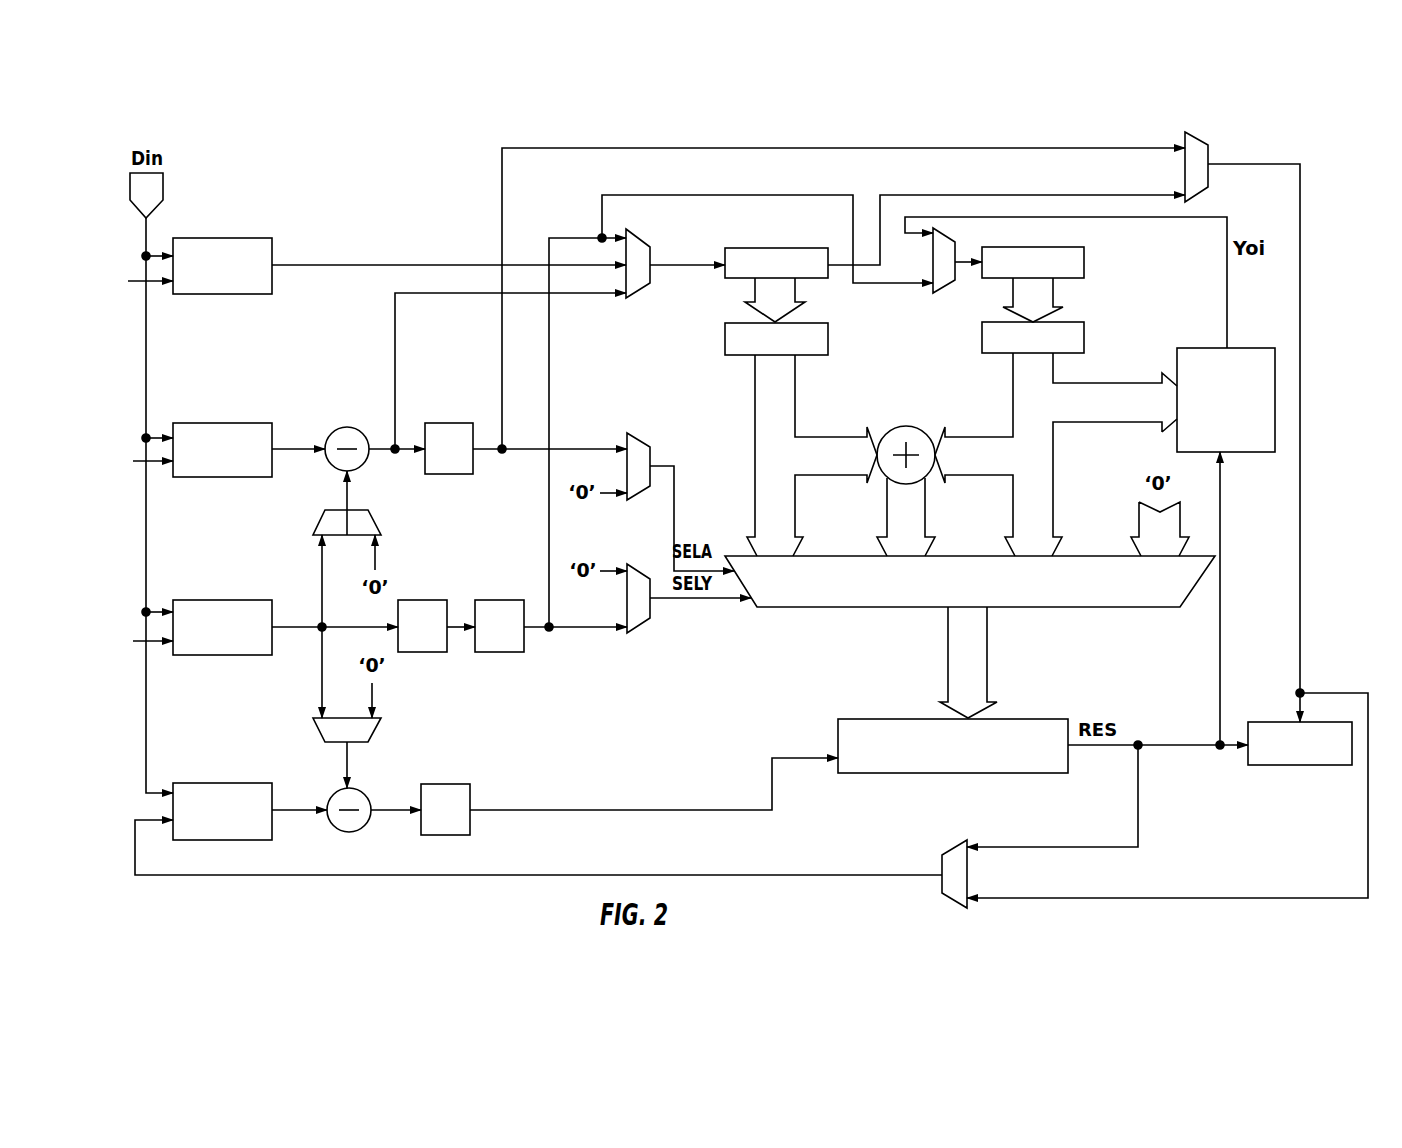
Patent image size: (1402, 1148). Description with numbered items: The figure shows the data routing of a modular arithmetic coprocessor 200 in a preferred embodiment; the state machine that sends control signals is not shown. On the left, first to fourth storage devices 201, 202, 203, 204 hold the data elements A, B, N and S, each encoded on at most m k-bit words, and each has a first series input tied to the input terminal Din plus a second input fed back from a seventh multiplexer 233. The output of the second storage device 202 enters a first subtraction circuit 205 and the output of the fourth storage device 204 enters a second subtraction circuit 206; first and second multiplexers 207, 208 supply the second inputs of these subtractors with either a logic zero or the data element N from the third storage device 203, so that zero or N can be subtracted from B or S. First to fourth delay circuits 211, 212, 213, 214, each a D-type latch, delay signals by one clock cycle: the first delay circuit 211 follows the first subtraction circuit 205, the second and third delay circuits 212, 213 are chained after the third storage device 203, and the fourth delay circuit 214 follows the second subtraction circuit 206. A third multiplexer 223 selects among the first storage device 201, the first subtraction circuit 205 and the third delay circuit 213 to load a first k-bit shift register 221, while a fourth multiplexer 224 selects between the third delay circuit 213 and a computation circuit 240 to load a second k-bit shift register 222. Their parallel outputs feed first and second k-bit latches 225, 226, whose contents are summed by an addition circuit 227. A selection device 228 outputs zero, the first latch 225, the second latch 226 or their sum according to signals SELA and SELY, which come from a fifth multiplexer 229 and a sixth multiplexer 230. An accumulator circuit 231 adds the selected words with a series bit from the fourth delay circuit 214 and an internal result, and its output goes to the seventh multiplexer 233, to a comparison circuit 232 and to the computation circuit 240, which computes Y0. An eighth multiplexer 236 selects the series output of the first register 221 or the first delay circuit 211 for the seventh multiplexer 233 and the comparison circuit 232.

The modular arithmetic coprocessor 200 is at (370, 209).
The first storage device 201 is at (219, 238).
The second storage device 202 is at (213, 423).
The third storage device 203 is at (219, 600).
The fourth storage device 204 is at (222, 783).
The first subtraction circuit 205 is at (347, 427).
The second subtraction circuit 206 is at (349, 832).
The first multiplexer 207 is at (381, 530).
The second multiplexer 208 is at (378, 731).
The first delay circuit 211 is at (450, 423).
The second delay circuit 212 is at (410, 600).
The third delay circuit 213 is at (488, 600).
The fourth delay circuit 214 is at (472, 784).
The first k-bit shift register 221 is at (791, 248).
The second k-bit shift register 222 is at (1084, 260).
The third multiplexer 223 is at (640, 300).
The fourth multiplexer 224 is at (942, 294).
The first k-bit latch 225 is at (725, 339).
The second k-bit latch 226 is at (1084, 338).
The addition circuit 227 is at (905, 426).
The selection device 228 is at (776, 608).
The fifth multiplexer 229 is at (640, 432).
The sixth multiplexer 230 is at (640, 636).
The accumulator circuit 231 is at (856, 719).
The comparison circuit 232 is at (1298, 765).
The seventh multiplexer 233 is at (962, 850).
The eighth multiplexer 236 is at (1208, 158).
The computation circuit 240 is at (1258, 348).